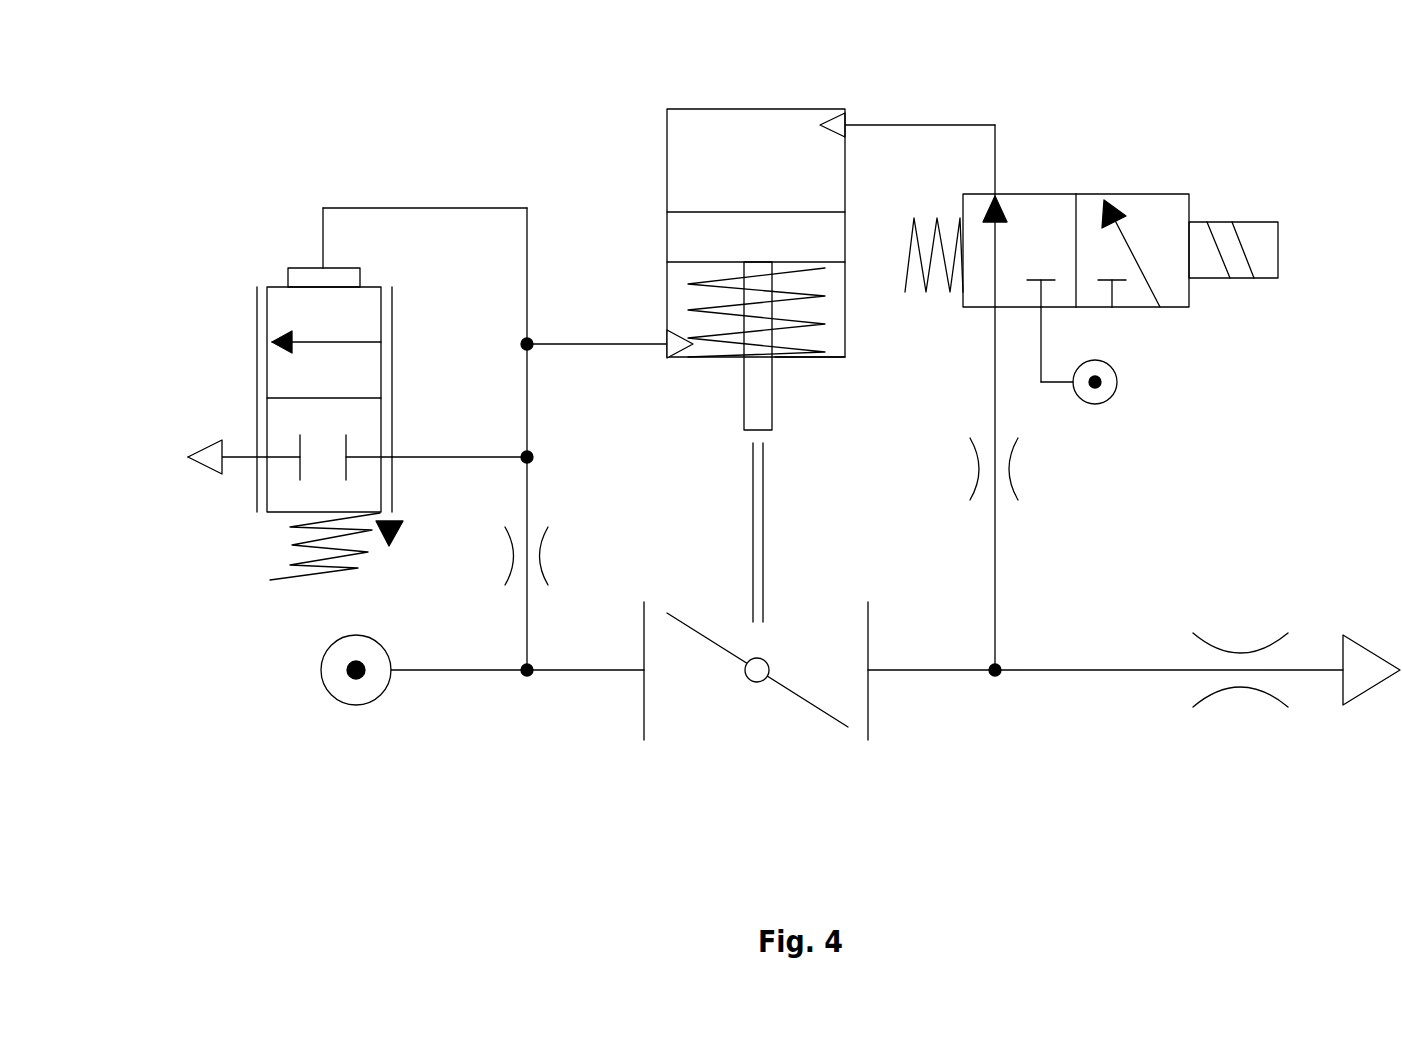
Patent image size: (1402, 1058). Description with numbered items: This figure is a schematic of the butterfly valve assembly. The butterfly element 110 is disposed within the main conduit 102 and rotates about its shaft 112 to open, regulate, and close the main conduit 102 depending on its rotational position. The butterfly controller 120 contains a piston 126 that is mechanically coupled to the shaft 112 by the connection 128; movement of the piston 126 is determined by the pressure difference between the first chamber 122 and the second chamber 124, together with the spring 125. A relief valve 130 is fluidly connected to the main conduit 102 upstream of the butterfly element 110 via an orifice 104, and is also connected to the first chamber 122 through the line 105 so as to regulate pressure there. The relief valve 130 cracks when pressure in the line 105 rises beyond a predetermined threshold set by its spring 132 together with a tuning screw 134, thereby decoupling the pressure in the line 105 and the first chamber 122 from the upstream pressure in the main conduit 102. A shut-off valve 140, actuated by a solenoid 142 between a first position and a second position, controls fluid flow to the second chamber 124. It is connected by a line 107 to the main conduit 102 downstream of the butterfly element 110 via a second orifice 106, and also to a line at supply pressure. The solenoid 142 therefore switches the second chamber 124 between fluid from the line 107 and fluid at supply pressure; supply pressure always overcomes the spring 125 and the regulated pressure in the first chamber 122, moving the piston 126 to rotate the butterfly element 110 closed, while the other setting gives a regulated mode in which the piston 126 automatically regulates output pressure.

The main conduit 102 is at (462, 672).
The orifice 104 is at (535, 575).
The line 105 is at (530, 395).
The second orifice 106 is at (1005, 493).
The line 107 is at (995, 350).
The butterfly element 110 is at (802, 698).
The shaft 112 is at (755, 676).
The butterfly controller 120 is at (665, 148).
The first chamber 122 is at (685, 298).
The second chamber 124 is at (753, 130).
The spring 125 is at (815, 320).
The piston 126 is at (705, 242).
The connection 128 is at (757, 393).
The relief valve 130 is at (285, 380).
The spring 132 is at (297, 537).
The tuning screw 134 is at (372, 537).
The shut-off valve 140 is at (1163, 212).
The solenoid 142 is at (1265, 268).